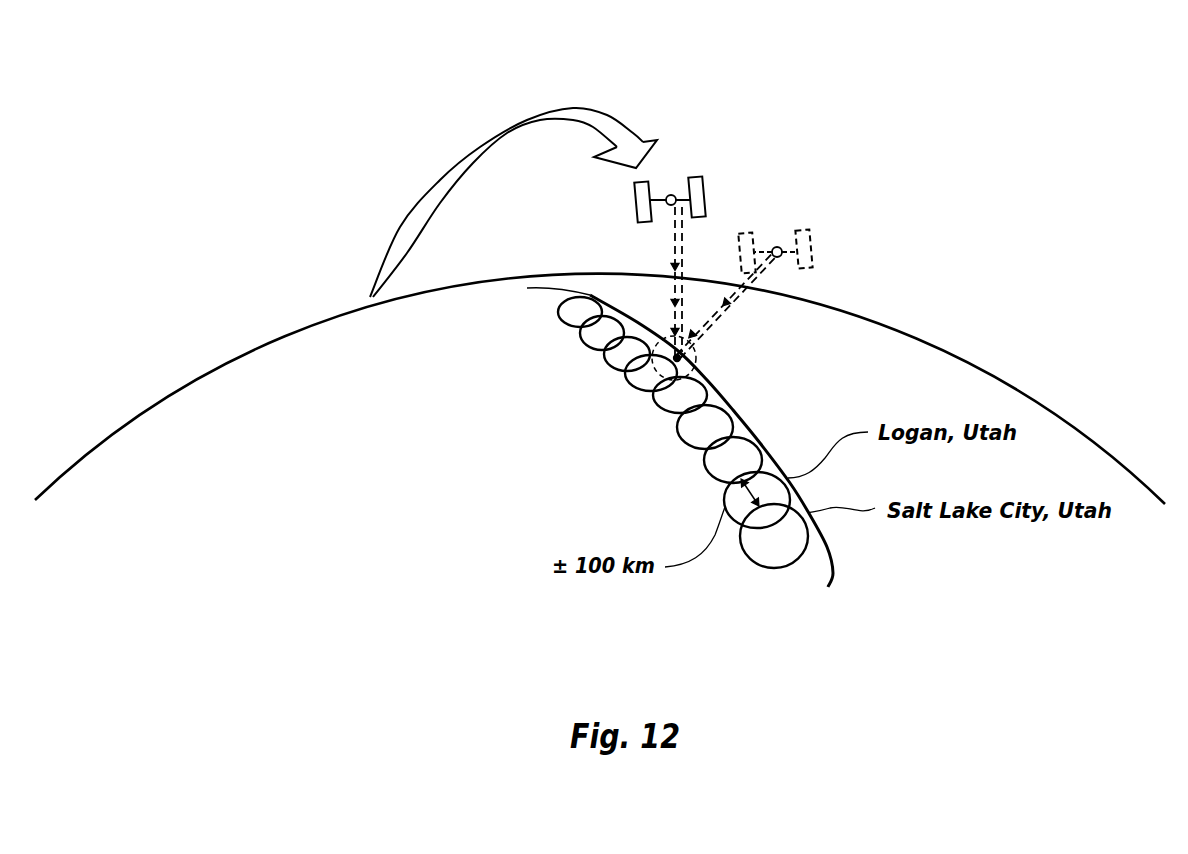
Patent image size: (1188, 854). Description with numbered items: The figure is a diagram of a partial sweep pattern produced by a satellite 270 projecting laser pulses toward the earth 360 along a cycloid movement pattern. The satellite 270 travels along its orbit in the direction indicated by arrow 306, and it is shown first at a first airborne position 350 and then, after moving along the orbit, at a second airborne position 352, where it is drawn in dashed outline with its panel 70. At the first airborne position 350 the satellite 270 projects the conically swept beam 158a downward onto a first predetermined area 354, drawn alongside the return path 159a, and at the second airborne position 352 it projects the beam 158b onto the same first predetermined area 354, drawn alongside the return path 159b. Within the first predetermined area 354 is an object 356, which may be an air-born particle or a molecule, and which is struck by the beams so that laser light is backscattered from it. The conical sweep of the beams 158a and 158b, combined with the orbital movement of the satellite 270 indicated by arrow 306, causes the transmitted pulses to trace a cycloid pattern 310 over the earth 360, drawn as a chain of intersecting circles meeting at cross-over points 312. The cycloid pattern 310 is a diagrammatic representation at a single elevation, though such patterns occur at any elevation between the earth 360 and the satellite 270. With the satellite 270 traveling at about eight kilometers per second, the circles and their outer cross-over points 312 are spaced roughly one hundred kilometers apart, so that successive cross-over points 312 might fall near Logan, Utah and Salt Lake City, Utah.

The arrow 306 is at (568, 117).
The first airborne position 350 is at (698, 148).
The satellite 270 is at (703, 183).
The return link signal from first position 159a is at (682, 248).
The beam 158a is at (671, 268).
The second airborne position 352 is at (812, 204).
The satellite antenna panel 70 is at (812, 240).
The return link signal from second position 159b is at (735, 301).
The beam 158b is at (730, 318).
The earth 360 is at (983, 370).
The cycloid pattern 310 is at (556, 313).
The cross-over points 312 is at (700, 385).
The first predetermined area 354 is at (653, 366).
The object 356 is at (682, 360).